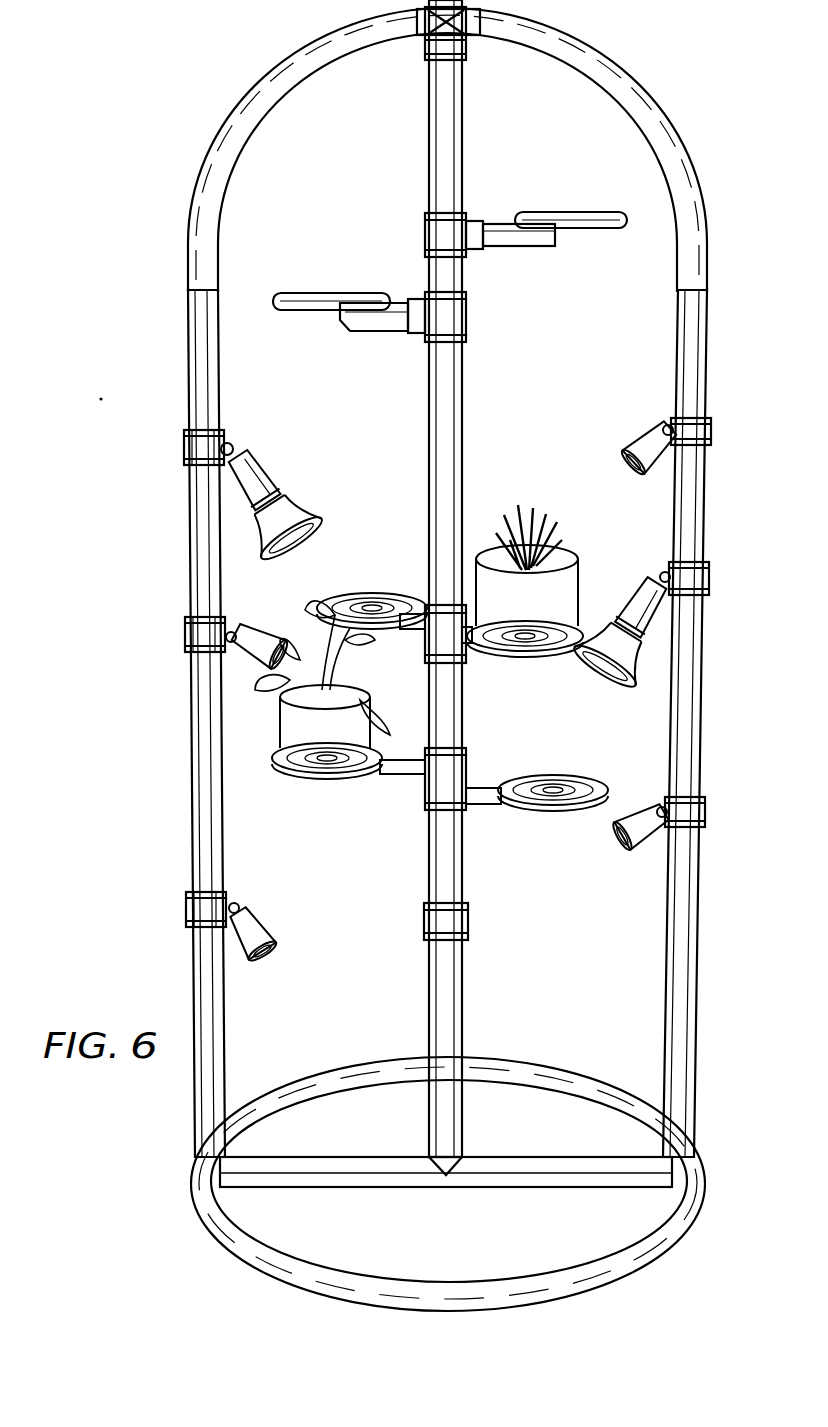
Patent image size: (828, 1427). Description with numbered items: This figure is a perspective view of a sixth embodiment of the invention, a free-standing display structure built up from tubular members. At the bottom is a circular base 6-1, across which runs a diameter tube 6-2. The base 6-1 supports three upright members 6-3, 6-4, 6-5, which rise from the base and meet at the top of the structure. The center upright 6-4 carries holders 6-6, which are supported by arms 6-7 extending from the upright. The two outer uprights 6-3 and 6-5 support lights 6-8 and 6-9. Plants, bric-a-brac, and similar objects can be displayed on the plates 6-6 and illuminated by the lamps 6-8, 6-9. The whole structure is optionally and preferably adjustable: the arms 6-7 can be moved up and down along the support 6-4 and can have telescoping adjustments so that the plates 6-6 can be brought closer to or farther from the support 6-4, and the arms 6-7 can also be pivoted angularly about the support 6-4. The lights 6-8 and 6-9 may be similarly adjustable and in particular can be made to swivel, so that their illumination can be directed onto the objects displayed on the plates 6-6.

The circular base 6-1 is at (572, 1093).
The diameter tube 6-2 is at (556, 1188).
The upright member 6-3 is at (193, 806).
The center upright 6-4 is at (430, 970).
The upright member 6-5 is at (678, 971).
The holder 6-6 is at (541, 662).
The arm 6-7 is at (390, 793).
The light 6-8 is at (278, 475).
The light 6-9 is at (625, 468).